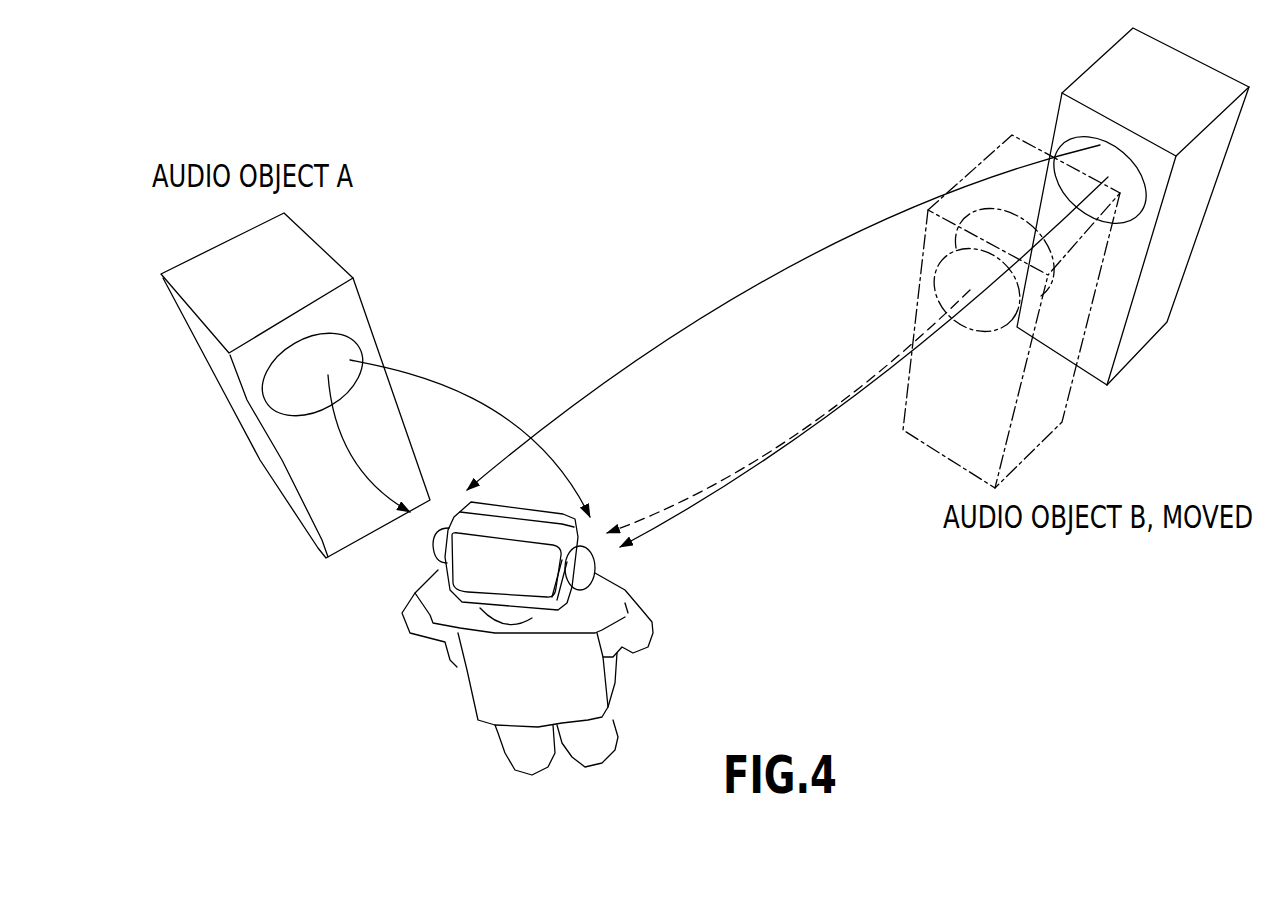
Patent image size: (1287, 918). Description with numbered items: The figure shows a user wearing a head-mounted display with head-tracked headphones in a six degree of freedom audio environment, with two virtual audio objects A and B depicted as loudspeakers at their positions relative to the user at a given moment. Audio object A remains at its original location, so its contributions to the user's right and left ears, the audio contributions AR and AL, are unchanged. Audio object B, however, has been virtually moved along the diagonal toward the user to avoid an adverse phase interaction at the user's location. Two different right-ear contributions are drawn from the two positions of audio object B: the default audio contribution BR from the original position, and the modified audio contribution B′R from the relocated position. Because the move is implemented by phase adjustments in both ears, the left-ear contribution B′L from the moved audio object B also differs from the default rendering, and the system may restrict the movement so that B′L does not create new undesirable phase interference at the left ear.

The right-ear audio contribution of audio object A AR is at (445, 385).
The left-ear audio contribution of audio object A AL is at (384, 492).
The modified left-ear audio contribution of audio object B B′L is at (695, 322).
The default right-ear audio contribution of audio object B BR is at (698, 495).
The modified right-ear audio contribution of audio object B B′R is at (687, 510).